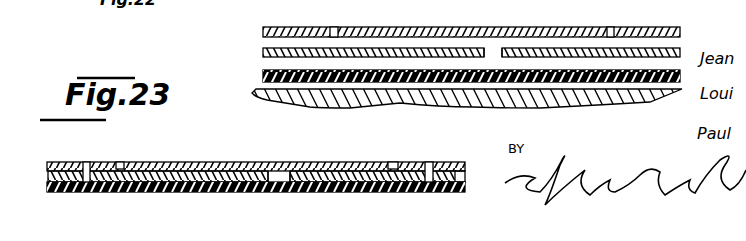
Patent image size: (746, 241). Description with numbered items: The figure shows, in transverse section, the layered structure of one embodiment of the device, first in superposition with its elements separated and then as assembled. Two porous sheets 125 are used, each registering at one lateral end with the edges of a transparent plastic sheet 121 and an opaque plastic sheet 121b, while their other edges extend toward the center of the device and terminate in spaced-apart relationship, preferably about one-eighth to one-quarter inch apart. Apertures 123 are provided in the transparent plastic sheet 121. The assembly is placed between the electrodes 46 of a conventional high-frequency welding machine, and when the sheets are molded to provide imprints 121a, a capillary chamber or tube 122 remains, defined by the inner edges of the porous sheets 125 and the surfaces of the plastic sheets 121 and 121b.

In FIG. 22, the electrodes 46 is at (255, 90).
In FIG. 22, the transparent plastic sheet 121 is at (453, 28).
In FIG. 23, the transparent plastic sheet 121 is at (298, 162).
In FIG. 23, the imprints 121a is at (88, 162).
In FIG. 22, the opaque plastic sheet 121b is at (477, 82).
In FIG. 23, the opaque plastic sheet 121b is at (136, 182).
In FIG. 22, the capillary chamber 122 is at (493, 49).
In FIG. 23, the capillary chamber 122 is at (283, 182).
In FIG. 22, the apertures 123 is at (334, 28).
In FIG. 23, the apertures 123 is at (121, 164).
In FIG. 22, the porous sheets 125 is at (263, 52).
In FIG. 23, the porous sheets 125 is at (47, 176).